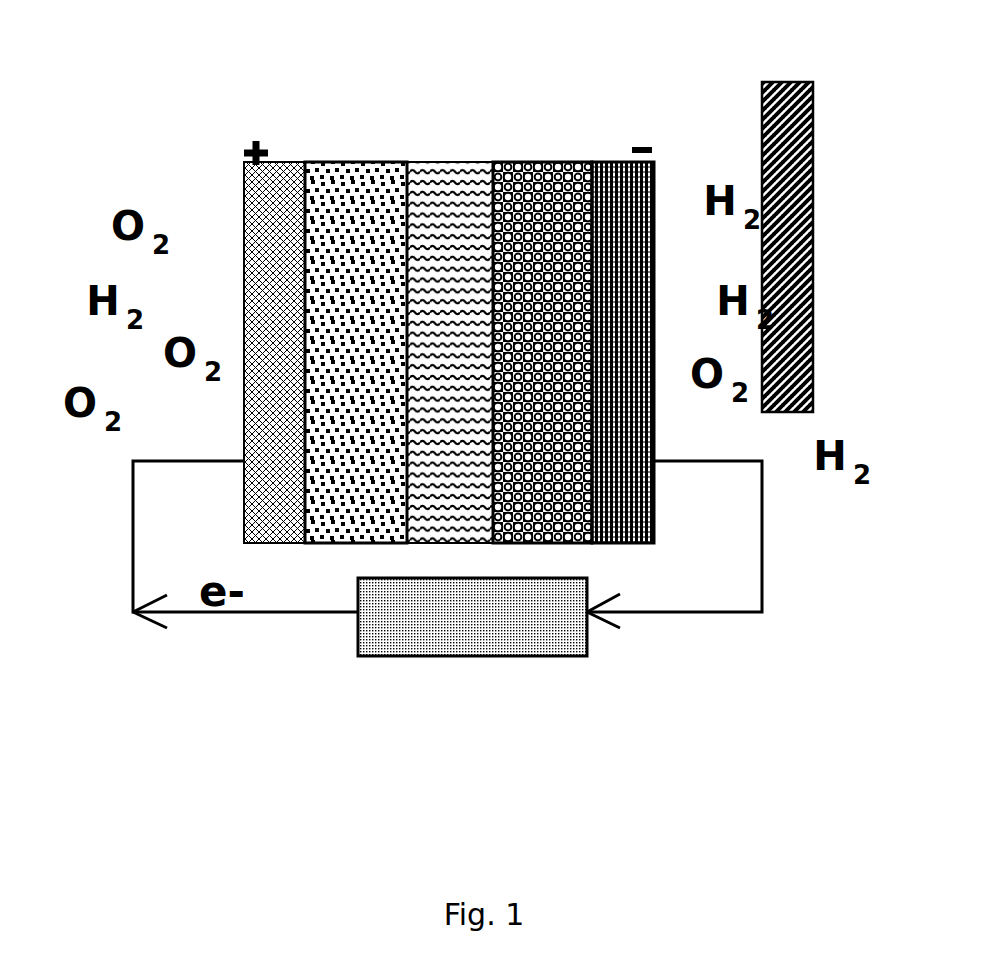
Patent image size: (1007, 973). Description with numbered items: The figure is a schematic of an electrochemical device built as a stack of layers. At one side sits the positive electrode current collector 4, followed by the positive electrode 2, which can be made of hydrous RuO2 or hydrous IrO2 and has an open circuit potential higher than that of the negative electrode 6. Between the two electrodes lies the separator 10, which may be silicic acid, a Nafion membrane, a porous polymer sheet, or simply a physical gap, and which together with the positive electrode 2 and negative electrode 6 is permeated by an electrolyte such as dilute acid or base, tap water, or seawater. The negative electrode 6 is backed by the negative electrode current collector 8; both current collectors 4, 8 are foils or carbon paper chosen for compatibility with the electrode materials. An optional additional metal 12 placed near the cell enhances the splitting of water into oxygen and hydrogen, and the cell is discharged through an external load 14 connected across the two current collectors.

The positive electrode 2 is at (341, 150).
The positive electrode current collector 4 is at (233, 180).
The negative electrode 6 is at (535, 148).
The negative electrode current collector 8 is at (610, 148).
The separator 10 is at (446, 148).
The additional metal 12 is at (820, 160).
The load 14 is at (469, 667).